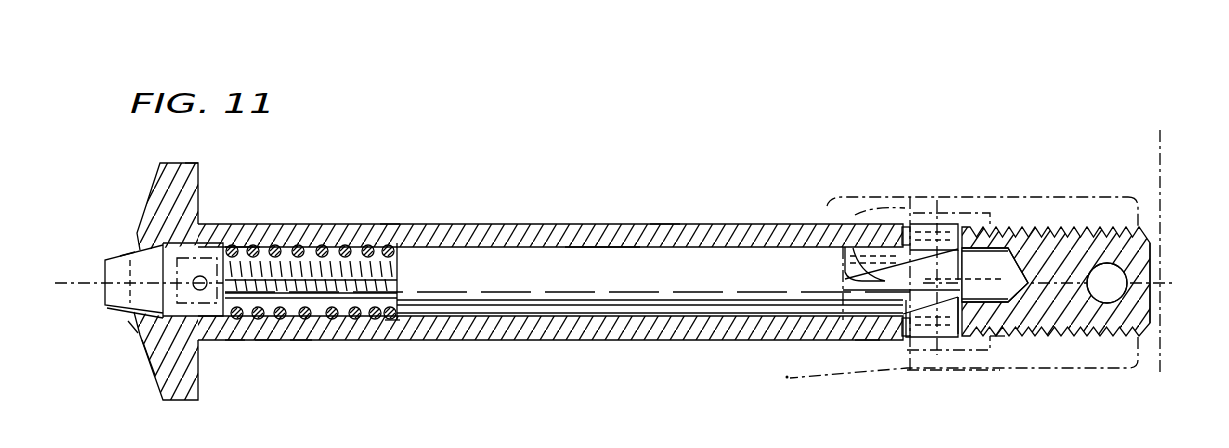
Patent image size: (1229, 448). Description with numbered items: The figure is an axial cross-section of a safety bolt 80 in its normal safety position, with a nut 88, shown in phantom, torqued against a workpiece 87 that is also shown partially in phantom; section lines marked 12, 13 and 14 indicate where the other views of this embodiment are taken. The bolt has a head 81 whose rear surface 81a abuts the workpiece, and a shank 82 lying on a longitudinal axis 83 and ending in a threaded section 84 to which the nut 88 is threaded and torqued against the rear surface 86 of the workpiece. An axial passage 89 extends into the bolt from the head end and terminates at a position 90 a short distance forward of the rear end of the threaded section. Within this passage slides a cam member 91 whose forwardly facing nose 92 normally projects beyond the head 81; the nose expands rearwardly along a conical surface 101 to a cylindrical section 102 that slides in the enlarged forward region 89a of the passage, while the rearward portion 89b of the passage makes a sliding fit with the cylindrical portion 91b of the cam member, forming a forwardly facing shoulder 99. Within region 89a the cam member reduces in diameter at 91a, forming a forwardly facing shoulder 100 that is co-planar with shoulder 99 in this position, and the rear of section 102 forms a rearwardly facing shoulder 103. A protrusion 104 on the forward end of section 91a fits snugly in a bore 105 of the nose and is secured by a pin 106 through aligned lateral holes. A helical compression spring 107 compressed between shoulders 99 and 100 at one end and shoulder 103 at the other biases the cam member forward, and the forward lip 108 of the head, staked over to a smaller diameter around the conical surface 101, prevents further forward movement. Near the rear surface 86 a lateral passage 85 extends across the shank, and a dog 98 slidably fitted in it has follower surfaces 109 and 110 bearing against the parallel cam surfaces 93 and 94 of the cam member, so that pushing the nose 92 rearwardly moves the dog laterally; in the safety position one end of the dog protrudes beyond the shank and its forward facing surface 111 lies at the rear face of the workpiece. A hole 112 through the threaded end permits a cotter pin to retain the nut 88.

The safety bolt 80 is at (501, 203).
The head 81 is at (155, 178).
The rear surface of head 81a is at (200, 165).
The shank 82 is at (390, 226).
The longitudinal axis 83 is at (1158, 290).
The threaded section 84 is at (1071, 337).
The lateral passage 85 is at (966, 234).
The rear surface of workpiece 86 is at (937, 197).
The workpiece 87 is at (787, 377).
The nut 88 is at (1130, 197).
The axial passage 89 is at (613, 252).
The forward region of axial passage 89a is at (328, 322).
The rearward portion of axial passage 89b is at (576, 252).
The terminating position of axial passage 90 is at (997, 337).
The cam member 91 is at (702, 247).
The reduced-diameter section of cam member 91a is at (267, 340).
The cylindrical portion of cam member 91b is at (663, 247).
The nose 92 is at (103, 270).
The cam surface 93 is at (851, 247).
The cam surface 94 is at (952, 337).
The dog 98 is at (928, 212).
The shoulder 99 is at (392, 322).
The shoulder 100 is at (392, 266).
The conical surface 101 is at (125, 256).
The cylindrical section of nose 102 is at (197, 225).
The shoulder 103 is at (233, 340).
The protrusion 104 is at (207, 222).
The bore 105 is at (258, 226).
The pin 106 is at (147, 357).
The helical compression spring 107 is at (300, 340).
The forward lip 108 is at (128, 321).
The follower surface 109 is at (994, 248).
The follower surface 110 is at (865, 340).
The forward facing surface of dog 111 is at (910, 221).
The hole 112 is at (1120, 292).
The section line 12- 12 is at (1160, 130).
The section line 13- 13 is at (937, 200).
The section line 14- 14 is at (828, 135).